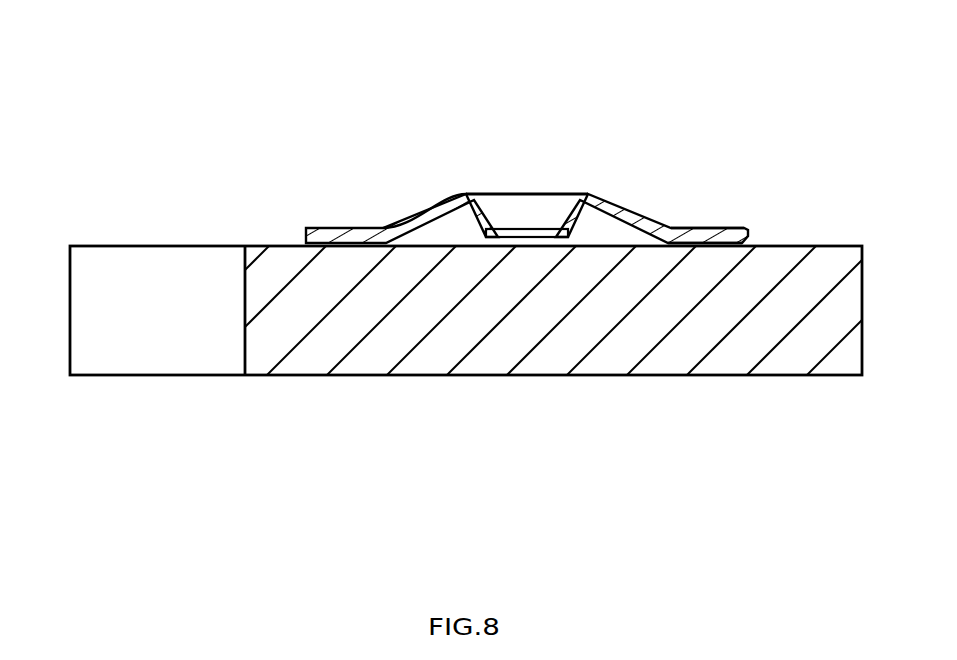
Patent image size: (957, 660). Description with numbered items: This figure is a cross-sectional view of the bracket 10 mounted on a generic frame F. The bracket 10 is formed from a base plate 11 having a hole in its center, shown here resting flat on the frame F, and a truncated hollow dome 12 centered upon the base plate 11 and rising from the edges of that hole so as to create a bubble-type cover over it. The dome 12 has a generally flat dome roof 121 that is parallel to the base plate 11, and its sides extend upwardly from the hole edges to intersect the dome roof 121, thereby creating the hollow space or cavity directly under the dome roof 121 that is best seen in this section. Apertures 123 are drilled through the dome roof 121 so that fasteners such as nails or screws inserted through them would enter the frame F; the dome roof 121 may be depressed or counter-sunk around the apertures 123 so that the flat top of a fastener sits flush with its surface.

The frame F is at (173, 268).
The bracket 10 is at (318, 221).
The base plate 11 is at (728, 226).
The dome 12 is at (413, 217).
The dome roof 121 is at (542, 194).
The apertures 123 is at (518, 229).